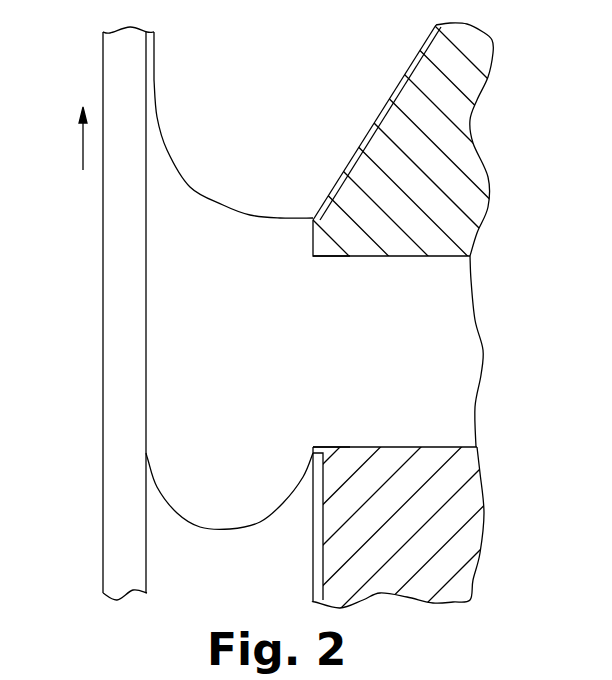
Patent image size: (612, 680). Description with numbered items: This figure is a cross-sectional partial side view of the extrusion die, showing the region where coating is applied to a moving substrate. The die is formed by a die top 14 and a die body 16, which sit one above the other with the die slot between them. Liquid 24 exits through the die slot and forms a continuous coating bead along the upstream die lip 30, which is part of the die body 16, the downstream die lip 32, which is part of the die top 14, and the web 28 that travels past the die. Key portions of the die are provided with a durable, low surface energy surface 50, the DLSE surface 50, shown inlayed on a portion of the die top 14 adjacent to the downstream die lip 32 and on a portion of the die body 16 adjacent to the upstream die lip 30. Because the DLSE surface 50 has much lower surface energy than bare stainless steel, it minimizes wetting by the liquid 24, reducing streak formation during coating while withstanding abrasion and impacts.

The die top 14 is at (443, 56).
The die body 16 is at (412, 473).
The liquid 24 is at (465, 367).
The web 28 is at (118, 240).
The upstream die lip 30 is at (313, 446).
The downstream die lip 32 is at (307, 259).
The durable, low surface energy surface 50 is at (390, 96).